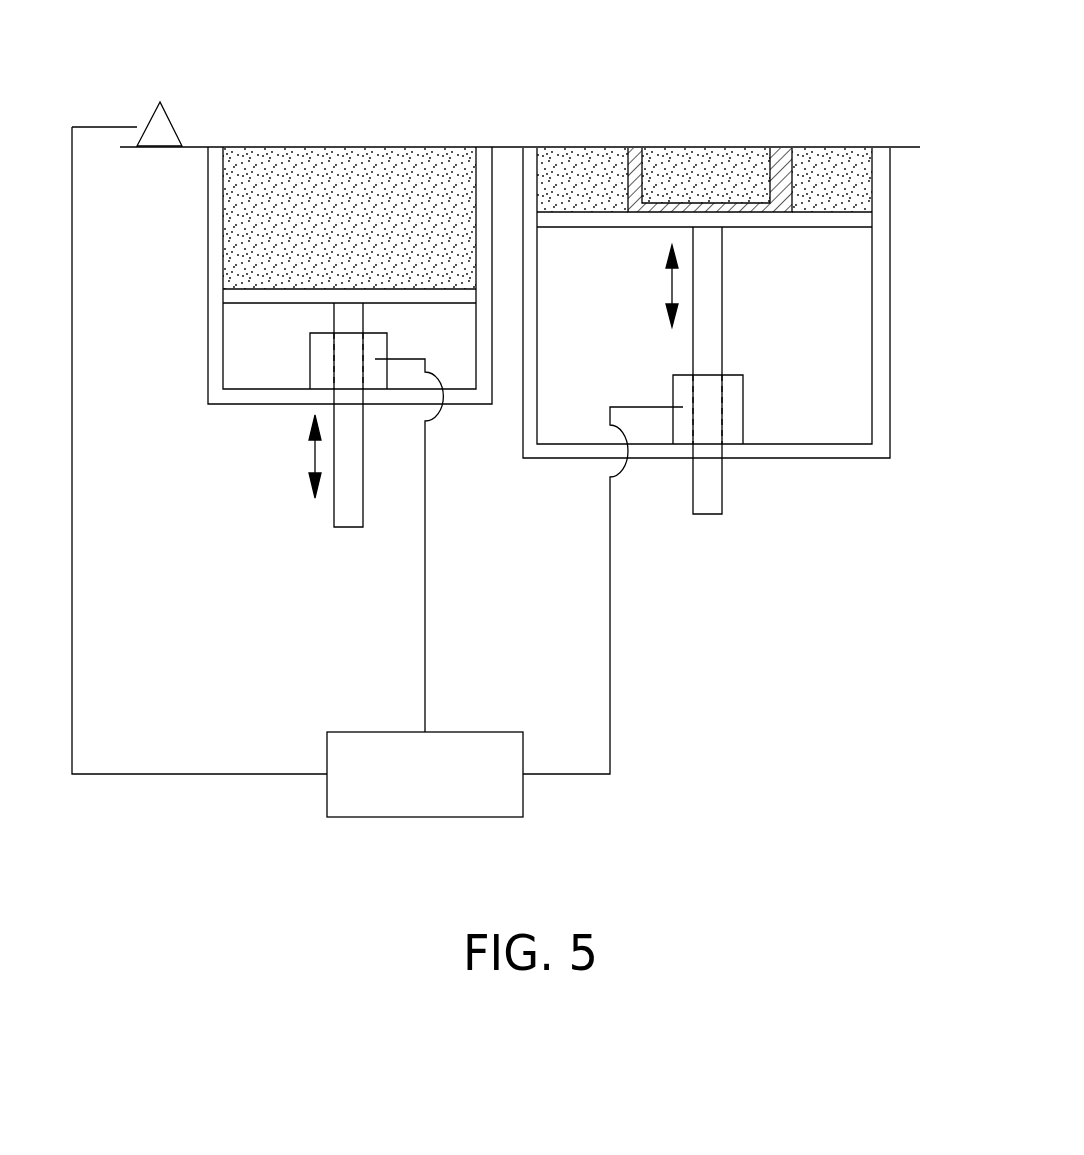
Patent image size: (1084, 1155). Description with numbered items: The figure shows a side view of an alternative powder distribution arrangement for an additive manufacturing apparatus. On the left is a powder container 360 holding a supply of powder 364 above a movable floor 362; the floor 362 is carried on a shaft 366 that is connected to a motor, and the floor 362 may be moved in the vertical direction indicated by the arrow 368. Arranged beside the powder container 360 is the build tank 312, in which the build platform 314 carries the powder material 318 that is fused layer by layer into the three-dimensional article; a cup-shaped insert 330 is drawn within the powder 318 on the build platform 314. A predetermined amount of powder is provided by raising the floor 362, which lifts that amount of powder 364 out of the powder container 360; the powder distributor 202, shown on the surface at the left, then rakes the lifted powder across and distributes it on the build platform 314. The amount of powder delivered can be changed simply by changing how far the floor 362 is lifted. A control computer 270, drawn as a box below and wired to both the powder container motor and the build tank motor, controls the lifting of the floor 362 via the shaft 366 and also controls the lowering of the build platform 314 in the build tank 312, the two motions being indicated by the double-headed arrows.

The powder distributor 202 is at (161, 122).
The powder container 360 is at (210, 218).
The first filling material 364 is at (345, 192).
The floor 362 is at (265, 297).
The shaft 366 is at (350, 506).
The arrow 368 is at (313, 458).
The control computer 270 is at (425, 774).
The build tank 312 is at (528, 410).
The powder material 318 is at (580, 173).
The cup insert 330 is at (785, 150).
The build platform 314 is at (828, 220).